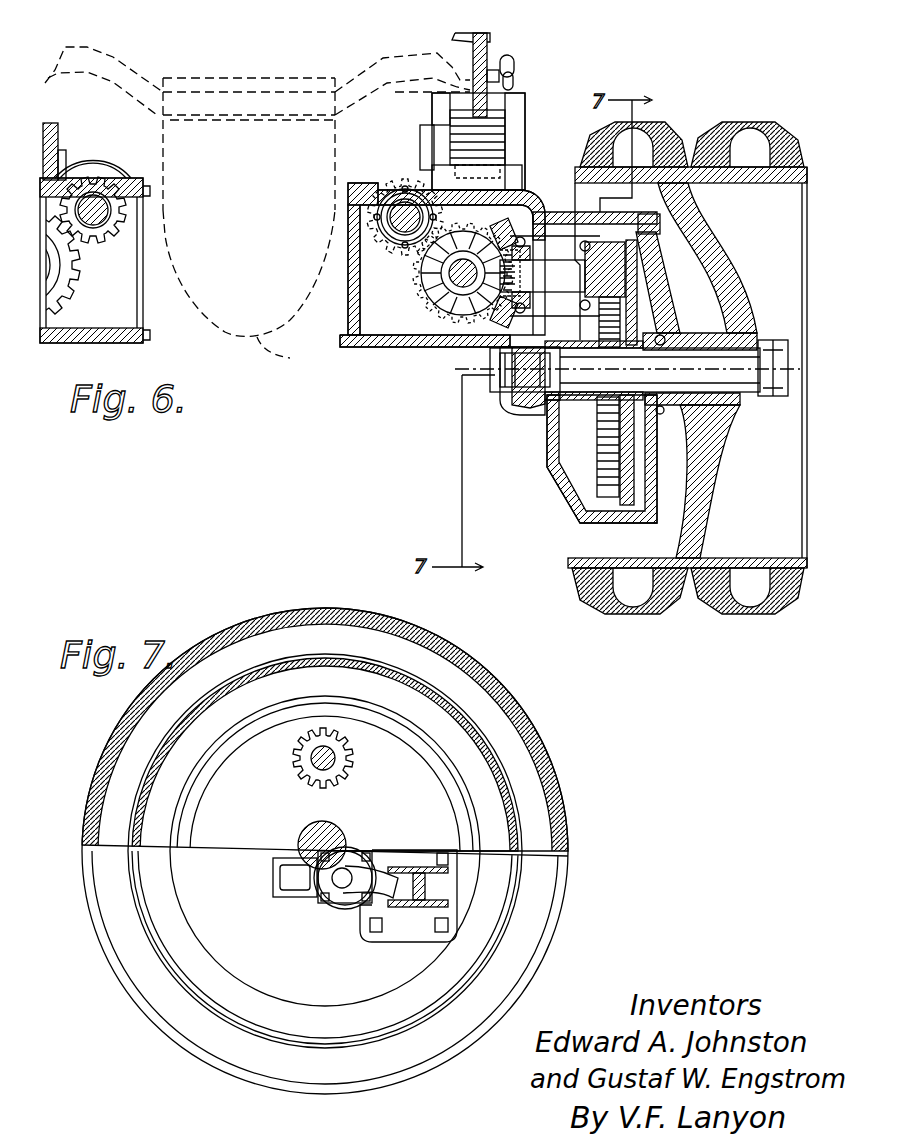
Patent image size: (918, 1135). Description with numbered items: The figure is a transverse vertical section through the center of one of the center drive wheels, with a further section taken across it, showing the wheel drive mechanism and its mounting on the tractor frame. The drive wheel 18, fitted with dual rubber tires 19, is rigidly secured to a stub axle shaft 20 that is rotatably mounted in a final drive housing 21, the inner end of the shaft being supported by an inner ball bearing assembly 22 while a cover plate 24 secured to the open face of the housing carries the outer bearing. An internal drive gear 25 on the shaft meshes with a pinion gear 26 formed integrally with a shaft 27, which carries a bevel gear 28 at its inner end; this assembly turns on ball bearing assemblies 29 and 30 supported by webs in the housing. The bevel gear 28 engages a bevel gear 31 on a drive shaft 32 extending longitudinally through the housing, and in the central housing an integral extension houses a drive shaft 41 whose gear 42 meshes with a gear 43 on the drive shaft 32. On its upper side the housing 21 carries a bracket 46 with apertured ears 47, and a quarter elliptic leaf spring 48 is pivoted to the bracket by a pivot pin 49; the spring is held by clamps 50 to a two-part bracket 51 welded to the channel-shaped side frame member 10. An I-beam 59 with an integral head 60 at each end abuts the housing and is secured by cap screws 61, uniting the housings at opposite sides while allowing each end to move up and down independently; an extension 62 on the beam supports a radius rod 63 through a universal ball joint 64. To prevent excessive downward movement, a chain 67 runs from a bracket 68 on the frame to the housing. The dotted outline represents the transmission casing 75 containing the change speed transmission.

In FIG. 6, the side frame member 10 is at (460, 37).
In FIG. 6, the drive wheel 18 is at (758, 565).
In FIG. 7, the drive wheel 18 is at (505, 790).
In FIG. 6, the rubber tires 19 is at (763, 618).
In FIG. 7, the rubber tires 19 is at (530, 730).
In FIG. 6, the stub axle shaft 20 is at (790, 372).
In FIG. 7, the stub axle shaft 20 is at (345, 838).
In FIG. 6, the final drive housing 21 is at (375, 348).
In FIG. 7, the final drive housing 21 is at (478, 835).
In FIG. 6, the inner ball bearing assembly 22 is at (532, 393).
In FIG. 6, the cover plate 24 is at (660, 248).
In FIG. 6, the internal drive gear 25 is at (590, 497).
In FIG. 7, the internal drive gear 25 is at (265, 745).
In FIG. 6, the pinion gear 26 is at (645, 262).
In FIG. 7, the pinion gear 26 is at (350, 770).
In FIG. 6, the shaft 27 is at (610, 240).
In FIG. 7, the shaft 27 is at (312, 778).
In FIG. 6, the bevel gear 28 is at (503, 322).
In FIG. 6, the ball bearing assembly 29 is at (578, 235).
In FIG. 6, the ball bearing assembly 30 is at (545, 260).
In FIG. 6, the bevel gear 31 is at (445, 295).
In FIG. 6, the drive shaft 32 is at (495, 312).
In FIG. 6, the drive shaft 41 is at (96, 200).
In FIG. 6, the gear 42 is at (118, 235).
In FIG. 6, the gear 43 is at (60, 305).
In FIG. 6, the bracket 46 is at (415, 190).
In FIG. 6, the apertured ears 47 is at (65, 158).
In FIG. 6, the quarter elliptic leaf spring 48 is at (50, 124).
In FIG. 6, the pivot pin 49 is at (435, 170).
In FIG. 6, the clamps 50 is at (512, 150).
In FIG. 6, the bracket 51 is at (516, 130).
In FIG. 7, the I-beam 59 is at (410, 920).
In FIG. 7, the head 60 is at (388, 940).
In FIG. 7, the cap screws 61 is at (372, 930).
In FIG. 7, the extension 62 is at (345, 888).
In FIG. 7, the radius rod 63 is at (280, 878).
In FIG. 7, the universal ball joint 64 is at (322, 890).
In FIG. 6, the chain 67 is at (514, 70).
In FIG. 6, the bracket 68 is at (490, 45).
In FIG. 6, the transmission casing 75 is at (287, 356).